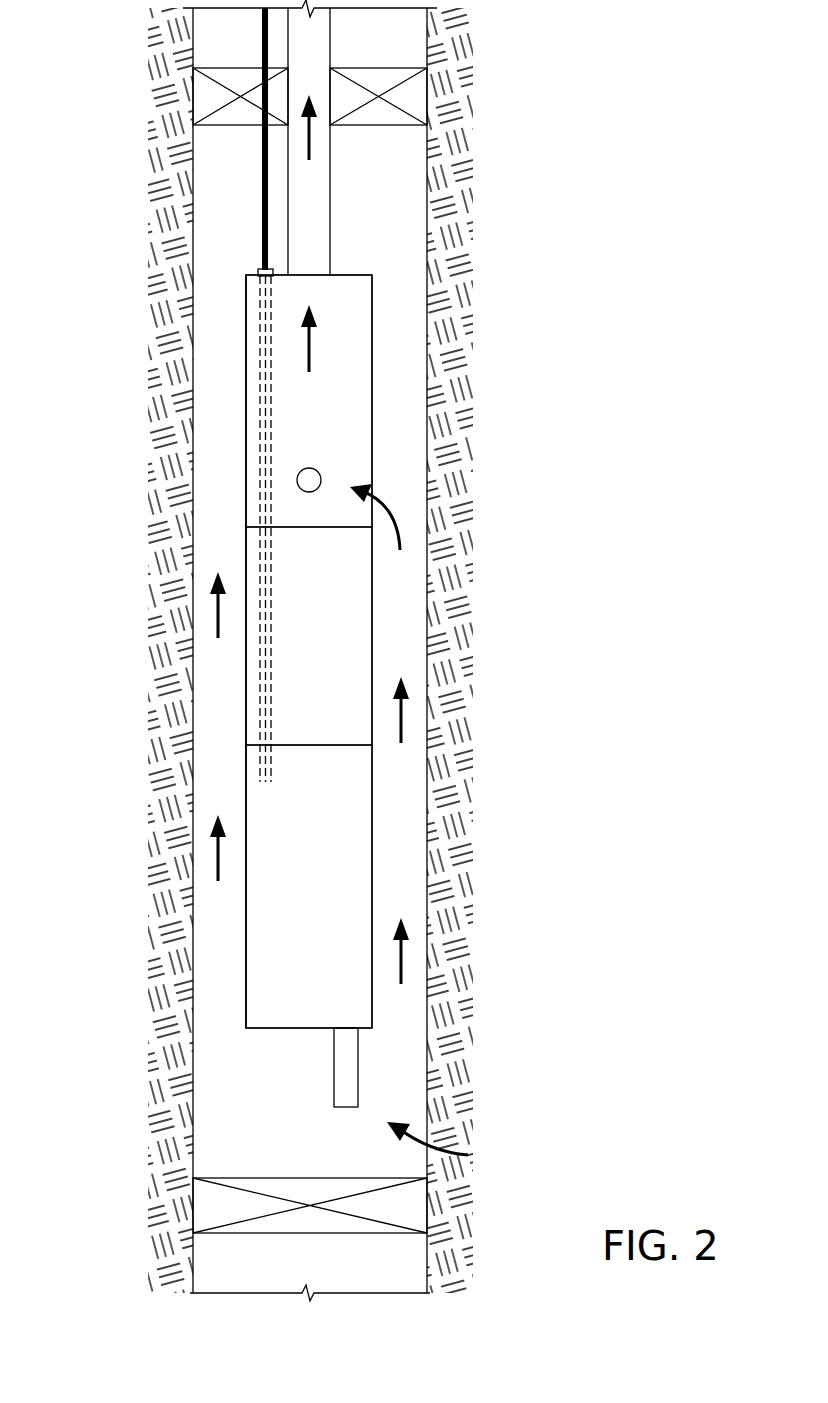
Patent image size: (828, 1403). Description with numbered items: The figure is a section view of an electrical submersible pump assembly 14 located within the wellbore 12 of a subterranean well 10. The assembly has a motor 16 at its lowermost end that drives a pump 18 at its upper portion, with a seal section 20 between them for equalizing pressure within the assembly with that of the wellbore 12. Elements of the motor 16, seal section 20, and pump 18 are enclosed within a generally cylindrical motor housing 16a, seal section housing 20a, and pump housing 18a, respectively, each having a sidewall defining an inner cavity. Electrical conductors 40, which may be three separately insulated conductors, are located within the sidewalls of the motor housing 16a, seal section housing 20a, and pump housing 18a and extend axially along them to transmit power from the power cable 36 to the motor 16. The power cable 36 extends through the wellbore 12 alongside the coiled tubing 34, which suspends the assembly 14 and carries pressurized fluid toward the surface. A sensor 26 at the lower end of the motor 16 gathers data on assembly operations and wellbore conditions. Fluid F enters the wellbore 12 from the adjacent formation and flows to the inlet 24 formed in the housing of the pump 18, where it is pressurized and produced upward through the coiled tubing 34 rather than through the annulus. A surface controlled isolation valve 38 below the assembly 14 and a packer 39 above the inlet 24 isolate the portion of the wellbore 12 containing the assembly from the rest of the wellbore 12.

The subterranean well 10 is at (560, 546).
The wellbore 12 is at (282, 1118).
The electrical submersible pump assembly 14 is at (400, 318).
The motor 16 is at (348, 818).
The motor housing 16a is at (247, 922).
The pump 18 is at (355, 373).
The pump housing 18a is at (246, 388).
The seal section 20 is at (342, 647).
The seal section housing 20a is at (247, 706).
The inlet 24 is at (309, 480).
The sensor 26 is at (353, 1078).
The coiled tubing 34 is at (330, 190).
The power cable 36 is at (262, 170).
The surface controlled isolation valve 38 is at (400, 1203).
The packer 39 is at (411, 91).
The electrical conductors 40 is at (260, 459).
The fluid F is at (420, 1133).